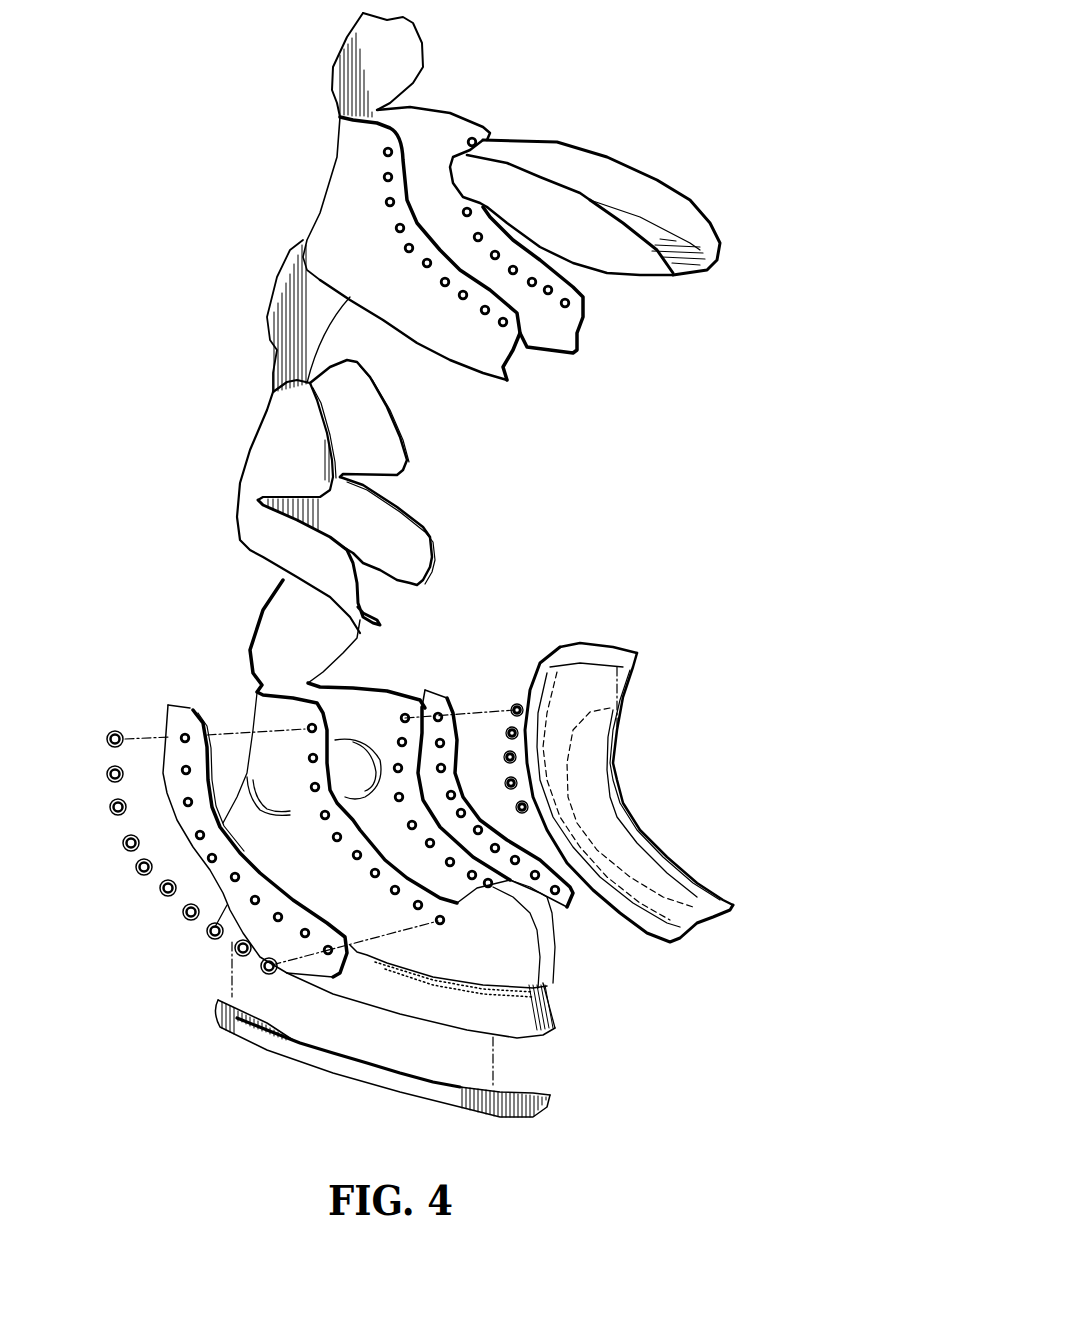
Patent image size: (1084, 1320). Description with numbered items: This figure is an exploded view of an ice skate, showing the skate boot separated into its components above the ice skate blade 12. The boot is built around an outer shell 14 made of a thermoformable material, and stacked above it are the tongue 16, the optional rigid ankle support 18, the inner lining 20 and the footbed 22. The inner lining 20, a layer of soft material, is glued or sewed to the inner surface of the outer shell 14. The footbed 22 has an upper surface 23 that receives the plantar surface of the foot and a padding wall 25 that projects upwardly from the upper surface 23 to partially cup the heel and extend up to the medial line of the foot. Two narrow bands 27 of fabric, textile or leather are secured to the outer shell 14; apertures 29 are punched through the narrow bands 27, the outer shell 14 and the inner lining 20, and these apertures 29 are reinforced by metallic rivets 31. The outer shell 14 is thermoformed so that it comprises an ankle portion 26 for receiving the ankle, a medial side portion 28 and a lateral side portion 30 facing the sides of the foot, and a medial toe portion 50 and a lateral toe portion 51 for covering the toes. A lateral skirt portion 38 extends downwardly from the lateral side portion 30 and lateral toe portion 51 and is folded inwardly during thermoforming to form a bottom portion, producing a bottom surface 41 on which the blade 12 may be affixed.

The ice skate blade 12 is at (550, 1103).
The outer shell 14 is at (273, 713).
The tongue 16 is at (587, 760).
The rigid ankle support 18 is at (273, 447).
The inner lining 20 is at (343, 190).
The footbed 22 is at (606, 216).
The upper surface 23 is at (707, 237).
The padding wall 25 is at (613, 253).
The ankle portion 26 is at (263, 777).
The narrow bands 27 is at (322, 810).
The medial side portion 28 is at (457, 840).
The apertures 29 is at (185, 768).
The lateral side portion 30 is at (315, 858).
The metallic rivets 31 is at (103, 733).
The lateral skirt portion 38 is at (460, 1012).
The bottom surface 41 is at (537, 1035).
The medial toe portion 50 is at (545, 925).
The lateral toe portion 51 is at (503, 955).